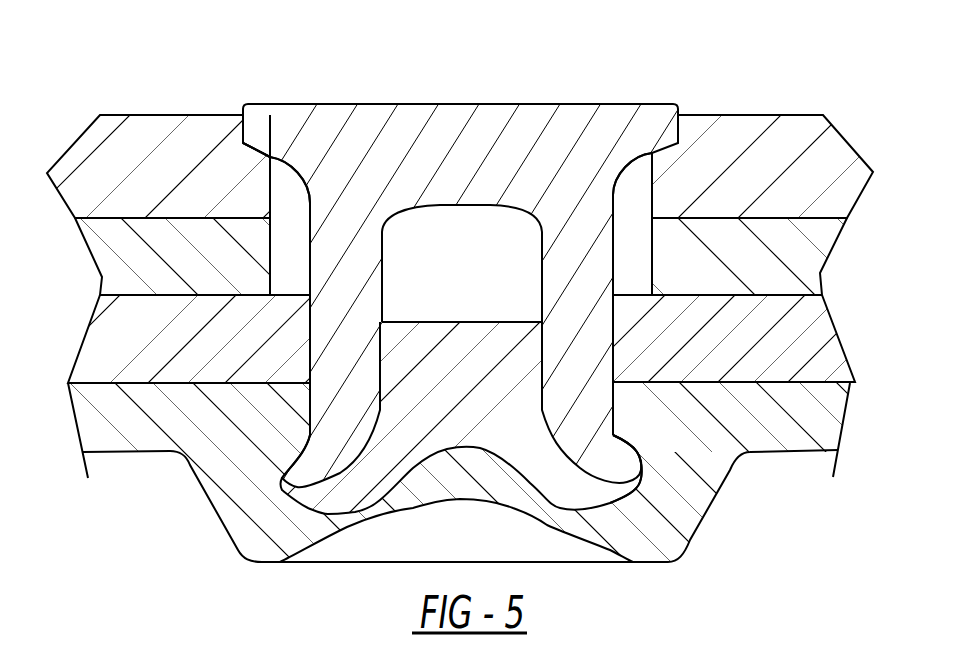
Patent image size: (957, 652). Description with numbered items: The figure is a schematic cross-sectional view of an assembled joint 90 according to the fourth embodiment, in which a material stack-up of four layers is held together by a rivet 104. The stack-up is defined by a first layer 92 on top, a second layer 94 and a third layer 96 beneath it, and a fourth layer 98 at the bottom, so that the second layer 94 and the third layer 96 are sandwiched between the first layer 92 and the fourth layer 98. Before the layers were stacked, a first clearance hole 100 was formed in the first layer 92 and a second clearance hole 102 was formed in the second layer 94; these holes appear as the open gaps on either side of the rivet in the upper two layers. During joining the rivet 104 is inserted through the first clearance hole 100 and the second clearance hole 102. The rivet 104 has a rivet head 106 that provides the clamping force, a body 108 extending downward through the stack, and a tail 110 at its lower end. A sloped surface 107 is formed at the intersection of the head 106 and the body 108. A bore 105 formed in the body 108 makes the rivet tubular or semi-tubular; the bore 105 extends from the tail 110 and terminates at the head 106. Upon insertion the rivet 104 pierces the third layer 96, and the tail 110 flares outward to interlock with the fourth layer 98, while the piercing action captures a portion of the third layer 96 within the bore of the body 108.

The joint 90 is at (127, 74).
The first layer 92 is at (105, 180).
The second layer 94 is at (135, 252).
The third layer 96 is at (127, 343).
The fourth layer 98 is at (118, 412).
The first clearance hole 100 is at (287, 197).
The second clearance hole 102 is at (287, 263).
The rivet 104 is at (273, 125).
The bore 105 is at (483, 257).
The rivet head 106 is at (487, 128).
The sloped surface 107 is at (262, 150).
The body 108 is at (357, 368).
The tail 110 is at (613, 458).